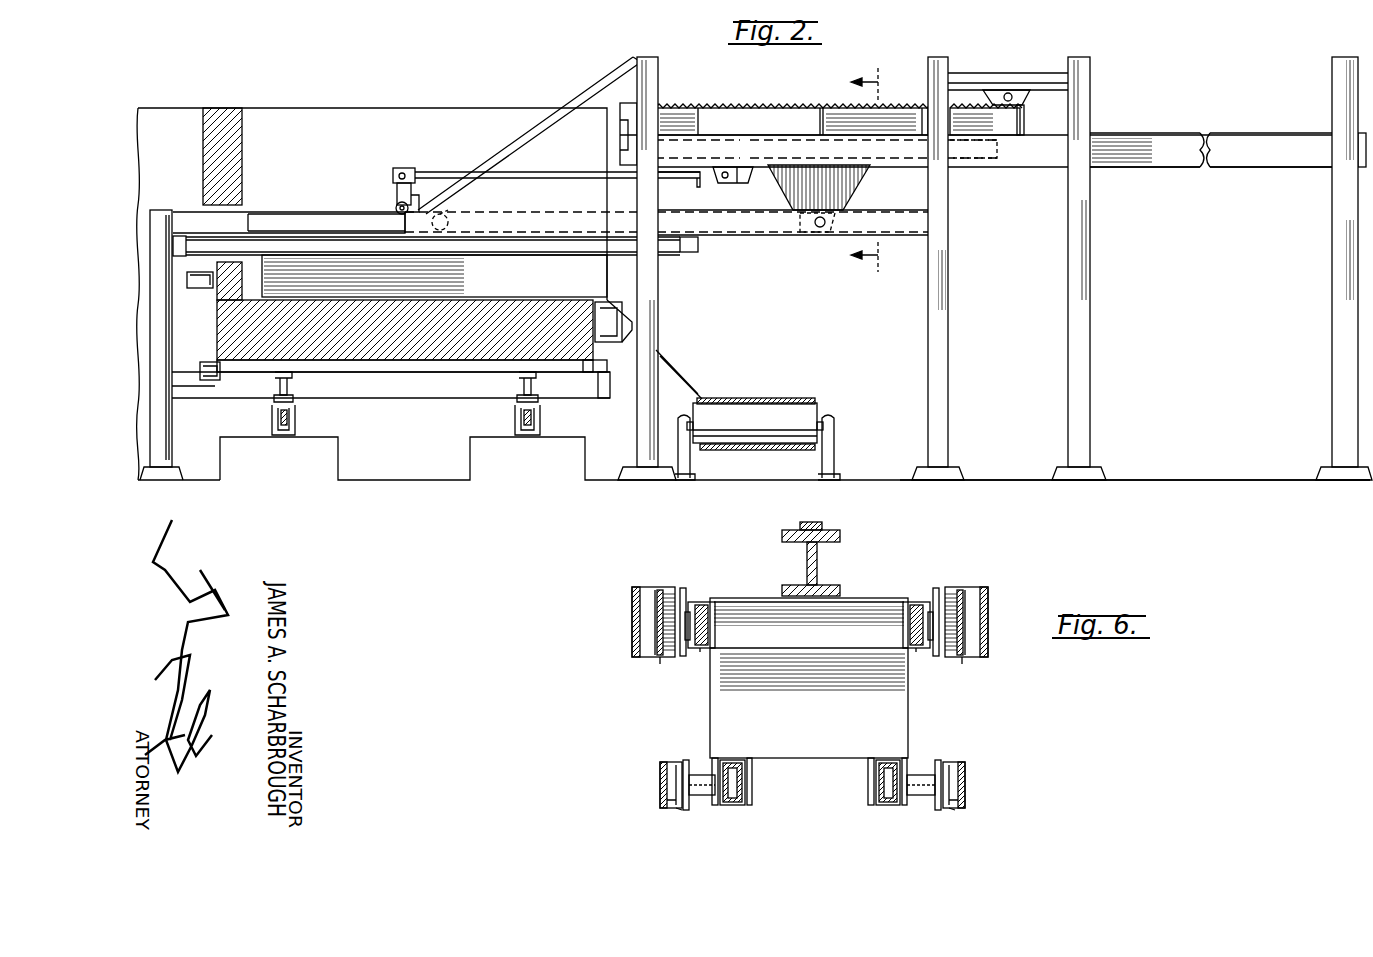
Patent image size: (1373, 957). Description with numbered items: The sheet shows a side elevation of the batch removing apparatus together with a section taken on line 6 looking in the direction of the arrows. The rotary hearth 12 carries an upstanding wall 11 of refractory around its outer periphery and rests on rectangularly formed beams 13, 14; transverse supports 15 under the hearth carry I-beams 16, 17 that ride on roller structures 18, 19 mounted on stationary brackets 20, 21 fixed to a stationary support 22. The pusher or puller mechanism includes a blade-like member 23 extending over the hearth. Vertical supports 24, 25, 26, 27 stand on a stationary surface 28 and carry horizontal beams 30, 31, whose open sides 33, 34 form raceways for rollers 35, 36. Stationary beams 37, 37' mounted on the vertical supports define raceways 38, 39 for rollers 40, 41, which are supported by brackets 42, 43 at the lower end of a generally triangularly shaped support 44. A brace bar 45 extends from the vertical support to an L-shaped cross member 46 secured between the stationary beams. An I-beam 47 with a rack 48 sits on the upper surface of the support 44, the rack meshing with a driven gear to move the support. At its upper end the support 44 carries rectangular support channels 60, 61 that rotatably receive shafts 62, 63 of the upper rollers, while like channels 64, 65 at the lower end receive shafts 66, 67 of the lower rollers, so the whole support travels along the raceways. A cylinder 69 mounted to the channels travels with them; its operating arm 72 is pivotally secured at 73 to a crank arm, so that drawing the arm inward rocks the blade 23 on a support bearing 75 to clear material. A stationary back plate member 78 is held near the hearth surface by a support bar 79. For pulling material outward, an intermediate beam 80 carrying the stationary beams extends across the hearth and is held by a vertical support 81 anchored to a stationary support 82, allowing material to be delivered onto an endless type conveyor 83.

In FIG. 2, the section line 6 is at (871, 171).
In FIG. 2, the upstanding wall 11 is at (222, 285).
In FIG. 2, the hearth 12 is at (443, 335).
In FIG. 2, the rectangularly formed beam 13 is at (612, 392).
In FIG. 2, the rectangularly formed beam 14 is at (198, 390).
In FIG. 2, the transverse support 15 is at (378, 375).
In FIG. 2, the I-beam 16 is at (534, 388).
In FIG. 2, the I-beam 17 is at (276, 392).
In FIG. 2, the roller structure 18 is at (515, 400).
In FIG. 2, the roller structure 19 is at (294, 400).
In FIG. 2, the stationary bracket 20 is at (542, 426).
In FIG. 2, the stationary bracket 21 is at (296, 428).
In FIG. 2, the stationary support 22 is at (418, 481).
In FIG. 2, the blade-like member 23 is at (268, 245).
In FIG. 2, the vertical support 24 is at (660, 330).
In FIG. 2, the vertical support 25 is at (950, 330).
In FIG. 2, the vertical support 26 is at (1091, 330).
In FIG. 2, the vertical support 27 is at (1332, 330).
In FIG. 2, the stationary surface 28 is at (1226, 482).
In FIG. 2, the horizontal beam 30 is at (1262, 132).
In FIG. 6, the horizontal beam 30 is at (965, 587).
In FIG. 6, the horizontal beam 31 is at (638, 586).
In FIG. 6, the open side 33 is at (960, 658).
In FIG. 6, the open side 34 is at (664, 658).
In FIG. 2, the roller 35 is at (700, 182).
In FIG. 6, the roller 35 is at (935, 587).
In FIG. 6, the roller 36 is at (683, 587).
In FIG. 2, the stationary beam 37 is at (791, 207).
In FIG. 6, the stationary beam 37 is at (972, 769).
In FIG. 6, the stationary beam 37' is at (661, 769).
In FIG. 2, the raceway 38 is at (782, 240).
In FIG. 6, the raceway 38 is at (950, 808).
In FIG. 6, the raceway 39 is at (680, 808).
In FIG. 2, the roller 40 is at (440, 222).
In FIG. 6, the roller 40 is at (940, 760).
In FIG. 6, the roller 41 is at (685, 760).
In FIG. 6, the bracket 42 is at (866, 790).
In FIG. 6, the bracket 43 is at (752, 802).
In FIG. 6, the triangularly shaped support 44 is at (812, 741).
In FIG. 2, the brace bar 45 is at (560, 103).
In FIG. 2, the L-shaped cross member 46 is at (415, 205).
In FIG. 2, the I-beam 47 is at (786, 115).
In FIG. 6, the I-beam 47 is at (820, 580).
In FIG. 2, the rack 48 is at (698, 108).
In FIG. 6, the rack 48 is at (812, 522).
In FIG. 6, the support channel 60 is at (914, 650).
In FIG. 6, the support channel 61 is at (697, 650).
In FIG. 6, the shaft 62 is at (915, 602).
In FIG. 6, the shaft 63 is at (701, 600).
In FIG. 6, the support channel 64 is at (886, 806).
In FIG. 6, the support channel 65 is at (732, 806).
In FIG. 6, the shaft 66 is at (922, 775).
In FIG. 6, the shaft 67 is at (700, 775).
In FIG. 2, the cylinder 69 is at (747, 182).
In FIG. 2, the operating arm 72 is at (586, 171).
In FIG. 2, the pivot 73 is at (398, 195).
In FIG. 2, the support bearing 75 is at (398, 207).
In FIG. 2, the back plate member 78 is at (537, 279).
In FIG. 2, the support bar 79 is at (689, 246).
In FIG. 2, the intermediate beam 80 is at (165, 210).
In FIG. 2, the vertical support 81 is at (152, 420).
In FIG. 2, the stationary support 82 is at (183, 480).
In FIG. 2, the endless type conveyor 83 is at (818, 402).